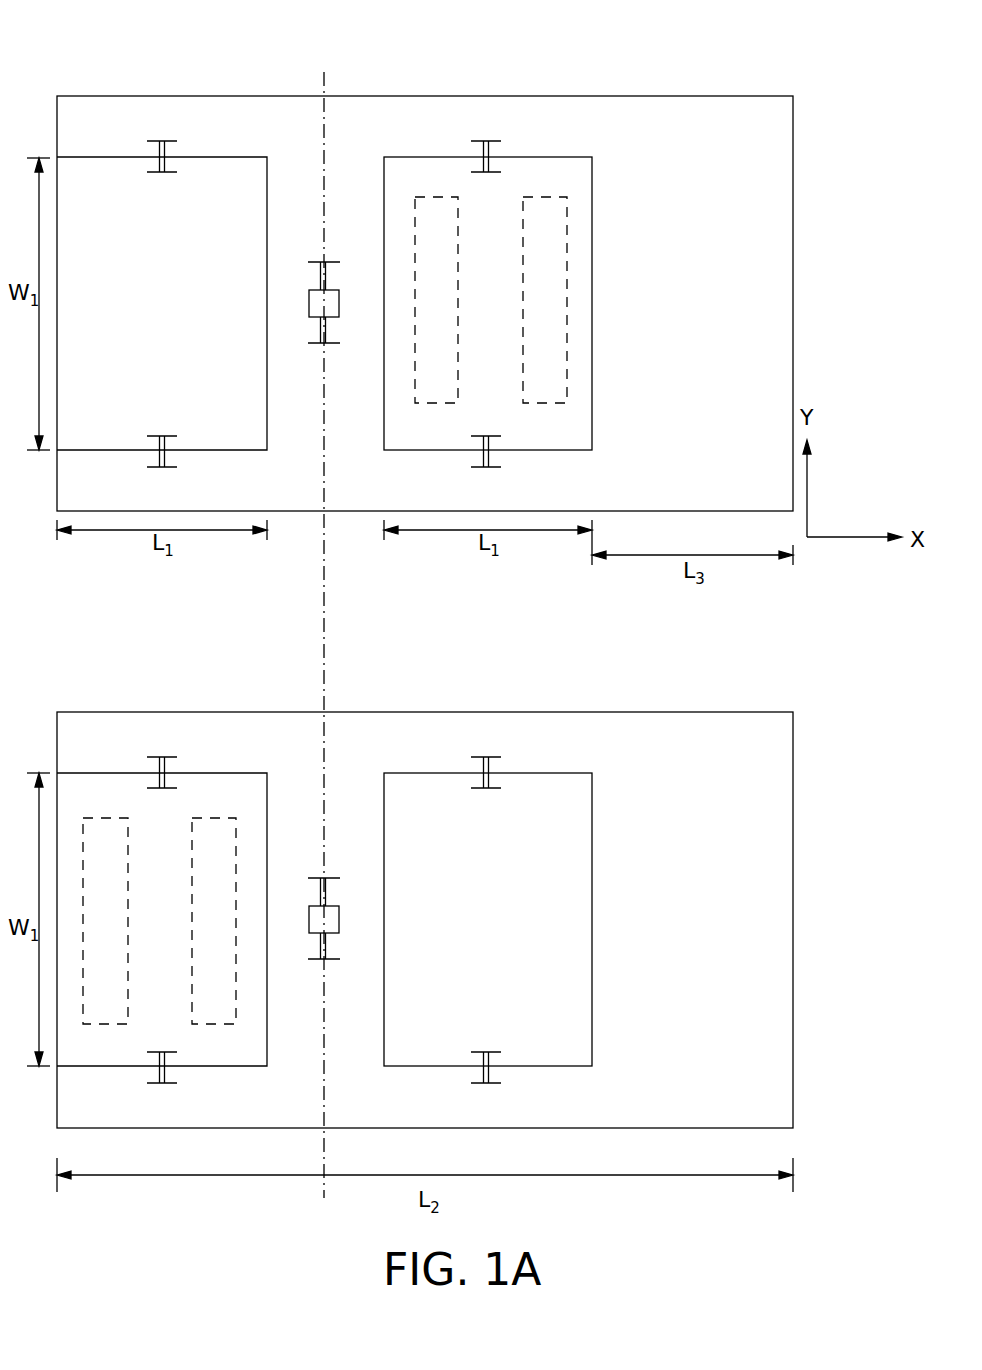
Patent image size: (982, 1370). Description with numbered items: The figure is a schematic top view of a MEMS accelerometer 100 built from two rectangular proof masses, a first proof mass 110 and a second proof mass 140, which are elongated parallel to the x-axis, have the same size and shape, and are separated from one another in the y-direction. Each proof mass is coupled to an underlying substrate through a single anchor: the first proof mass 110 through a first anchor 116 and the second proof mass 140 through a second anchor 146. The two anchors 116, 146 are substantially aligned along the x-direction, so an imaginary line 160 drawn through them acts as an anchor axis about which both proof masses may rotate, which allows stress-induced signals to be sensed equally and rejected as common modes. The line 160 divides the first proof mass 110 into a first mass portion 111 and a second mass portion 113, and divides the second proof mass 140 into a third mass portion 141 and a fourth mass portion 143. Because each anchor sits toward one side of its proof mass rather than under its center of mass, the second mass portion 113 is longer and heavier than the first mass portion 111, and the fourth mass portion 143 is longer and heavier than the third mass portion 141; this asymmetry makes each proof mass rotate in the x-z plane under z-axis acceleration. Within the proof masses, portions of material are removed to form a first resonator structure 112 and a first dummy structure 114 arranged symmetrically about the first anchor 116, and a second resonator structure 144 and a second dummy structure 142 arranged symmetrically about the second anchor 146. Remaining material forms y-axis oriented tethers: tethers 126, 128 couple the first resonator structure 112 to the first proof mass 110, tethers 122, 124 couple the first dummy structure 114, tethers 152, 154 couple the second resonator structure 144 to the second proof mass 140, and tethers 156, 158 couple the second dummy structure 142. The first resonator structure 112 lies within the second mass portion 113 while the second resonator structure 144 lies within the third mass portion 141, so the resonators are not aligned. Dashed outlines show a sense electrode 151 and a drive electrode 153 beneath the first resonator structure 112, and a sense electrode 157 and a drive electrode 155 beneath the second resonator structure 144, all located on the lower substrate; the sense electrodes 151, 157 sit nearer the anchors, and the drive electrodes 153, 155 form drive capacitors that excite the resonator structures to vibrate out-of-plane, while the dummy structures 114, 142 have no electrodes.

The MEMS accelerometer 100 is at (128, 68).
The first proof mass 110 is at (797, 112).
The first mass portion 111 is at (185, 98).
The first resonator structure 112 is at (575, 180).
The second mass portion 113 is at (707, 113).
The first dummy structure 114 is at (247, 170).
The first anchor 116 is at (340, 303).
The tether 122 is at (168, 152).
The tether 124 is at (168, 460).
The tether 126 is at (492, 152).
The tether 128 is at (492, 460).
The second proof mass 140 is at (797, 730).
The third mass portion 141 is at (92, 738).
The second dummy structure 142 is at (575, 795).
The fourth mass portion 143 is at (715, 738).
The second resonator structure 144 is at (247, 785).
The second anchor 146 is at (340, 919).
The sense electrode 151 is at (568, 305).
The tether 152 is at (168, 768).
The drive electrode 153 is at (455, 400).
The tether 154 is at (168, 1076).
The drive electrode 155 is at (238, 832).
The tether 156 is at (492, 768).
The sense electrode 157 is at (122, 1022).
The tether 158 is at (492, 1076).
The imaginary line 160 is at (325, 80).